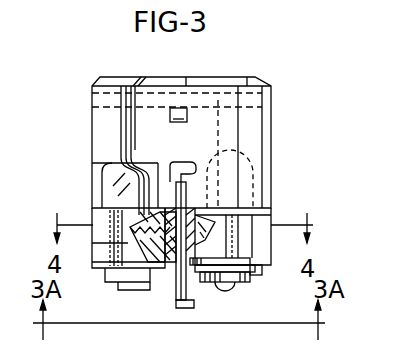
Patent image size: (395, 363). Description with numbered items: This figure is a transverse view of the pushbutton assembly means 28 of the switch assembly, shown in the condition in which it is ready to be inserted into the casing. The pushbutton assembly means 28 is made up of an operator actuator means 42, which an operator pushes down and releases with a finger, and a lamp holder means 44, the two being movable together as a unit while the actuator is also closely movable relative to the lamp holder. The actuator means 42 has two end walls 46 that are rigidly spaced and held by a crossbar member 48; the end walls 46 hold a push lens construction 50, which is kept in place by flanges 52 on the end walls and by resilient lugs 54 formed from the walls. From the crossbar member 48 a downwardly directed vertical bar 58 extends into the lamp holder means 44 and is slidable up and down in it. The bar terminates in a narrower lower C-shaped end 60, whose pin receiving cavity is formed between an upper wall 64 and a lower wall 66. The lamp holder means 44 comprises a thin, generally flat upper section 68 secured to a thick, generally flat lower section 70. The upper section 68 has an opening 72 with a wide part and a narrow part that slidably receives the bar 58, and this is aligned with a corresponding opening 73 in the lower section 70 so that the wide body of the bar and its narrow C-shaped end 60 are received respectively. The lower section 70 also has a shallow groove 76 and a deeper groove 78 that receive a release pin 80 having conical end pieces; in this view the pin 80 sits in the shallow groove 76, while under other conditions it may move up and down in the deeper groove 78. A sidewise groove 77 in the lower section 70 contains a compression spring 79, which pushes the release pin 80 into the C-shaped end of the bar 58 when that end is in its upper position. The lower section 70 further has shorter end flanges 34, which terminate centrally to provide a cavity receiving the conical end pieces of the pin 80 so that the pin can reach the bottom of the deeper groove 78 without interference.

The pushbutton assembly means 28 is at (308, 97).
The shorter end flanges 34 is at (136, 248).
The operator actuator means 42 is at (75, 98).
The lamp holder means 44 is at (288, 207).
The end walls 46 is at (264, 128).
The crossbar member 48 is at (171, 162).
The push lens construction 50 is at (186, 76).
The flanges 52 is at (247, 86).
The resilient lugs 54 is at (173, 108).
The vertical bar 58 is at (183, 213).
The C-shaped end 60 is at (192, 303).
The upper wall 64 is at (200, 290).
The lower wall 66 is at (187, 325).
The upper section 68 is at (95, 217).
The lower section 70 is at (94, 250).
The opening 72 is at (210, 212).
The opening 73 is at (252, 268).
The shallow groove 76 is at (165, 210).
The sidewise groove 77 is at (153, 215).
The deeper groove 78 is at (198, 250).
The compression spring 79 is at (132, 228).
The release pin 80 is at (178, 210).